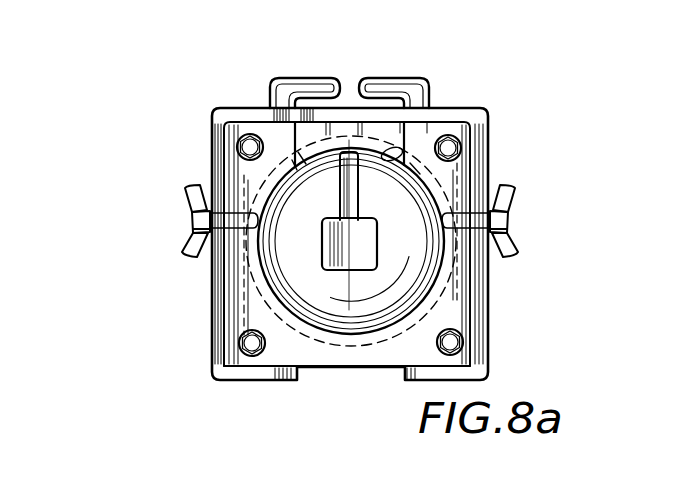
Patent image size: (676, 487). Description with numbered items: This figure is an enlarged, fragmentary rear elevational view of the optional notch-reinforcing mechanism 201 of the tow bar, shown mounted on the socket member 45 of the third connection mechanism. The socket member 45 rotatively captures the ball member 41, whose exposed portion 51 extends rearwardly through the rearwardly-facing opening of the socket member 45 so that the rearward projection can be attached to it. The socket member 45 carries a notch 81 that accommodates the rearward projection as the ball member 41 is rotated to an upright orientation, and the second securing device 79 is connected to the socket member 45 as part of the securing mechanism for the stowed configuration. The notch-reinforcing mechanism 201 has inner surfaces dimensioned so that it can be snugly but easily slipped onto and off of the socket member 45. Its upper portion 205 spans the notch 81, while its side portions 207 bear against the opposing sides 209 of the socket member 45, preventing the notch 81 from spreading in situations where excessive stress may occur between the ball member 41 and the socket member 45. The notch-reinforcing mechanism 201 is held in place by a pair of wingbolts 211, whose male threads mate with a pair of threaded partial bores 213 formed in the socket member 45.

The ball member 41 is at (303, 160).
The socket member 45 is at (240, 127).
The exposed portion 51 is at (407, 287).
The second securing device 79 is at (410, 90).
The notch 81 is at (403, 160).
The notch-reinforcing mechanism 201 is at (449, 98).
The upper portion 205 is at (277, 95).
The side portions 207 is at (220, 140).
The opposing sides 209 is at (227, 163).
The wingbolts 211 is at (187, 254).
The threaded partial bores 213 is at (220, 282).